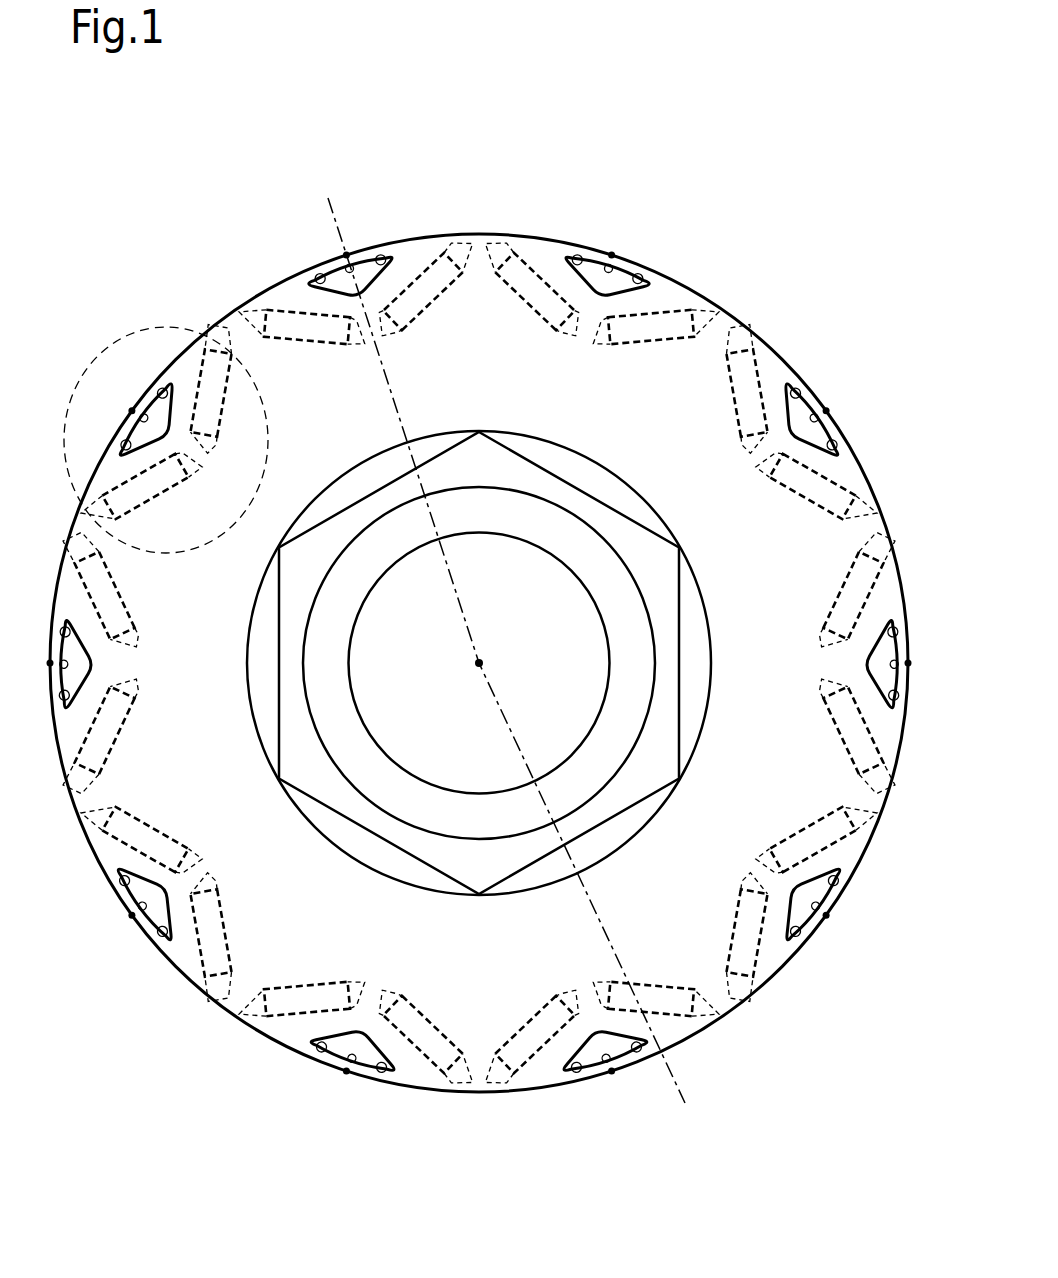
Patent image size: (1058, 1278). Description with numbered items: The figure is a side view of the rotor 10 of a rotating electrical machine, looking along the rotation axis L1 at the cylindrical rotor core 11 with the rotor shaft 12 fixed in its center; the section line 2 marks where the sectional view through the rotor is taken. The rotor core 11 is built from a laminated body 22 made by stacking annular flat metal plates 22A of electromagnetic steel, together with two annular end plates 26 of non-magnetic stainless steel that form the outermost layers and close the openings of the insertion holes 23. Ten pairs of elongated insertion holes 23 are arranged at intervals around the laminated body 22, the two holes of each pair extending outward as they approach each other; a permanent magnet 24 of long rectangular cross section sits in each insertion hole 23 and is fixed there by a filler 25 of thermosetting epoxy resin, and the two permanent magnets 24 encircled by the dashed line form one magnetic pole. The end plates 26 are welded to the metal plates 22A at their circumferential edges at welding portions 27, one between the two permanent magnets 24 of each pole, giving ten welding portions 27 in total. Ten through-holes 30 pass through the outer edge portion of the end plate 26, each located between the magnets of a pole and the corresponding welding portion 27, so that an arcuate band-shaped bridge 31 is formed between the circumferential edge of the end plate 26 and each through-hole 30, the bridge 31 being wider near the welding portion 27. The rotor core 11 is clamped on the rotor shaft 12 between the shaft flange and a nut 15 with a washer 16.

The rotor 10 is at (750, 212).
The rotor core 11 is at (622, 256).
The rotor shaft 12 is at (300, 670).
The nut 15 is at (277, 720).
The washer 16 is at (245, 640).
The section line 2 is at (328, 198).
The rotation axis L1 is at (483, 663).
The laminated body 22 is at (478, 674).
The metal plate 22A is at (797, 395).
The insertion hole 23 is at (135, 548).
The permanent magnet 24 is at (472, 663).
The filler 25 is at (878, 813).
The end plate 26 is at (712, 346).
The welding portion 27 is at (347, 254).
The through-hole 30 is at (322, 271).
The bridge 31 is at (641, 271).